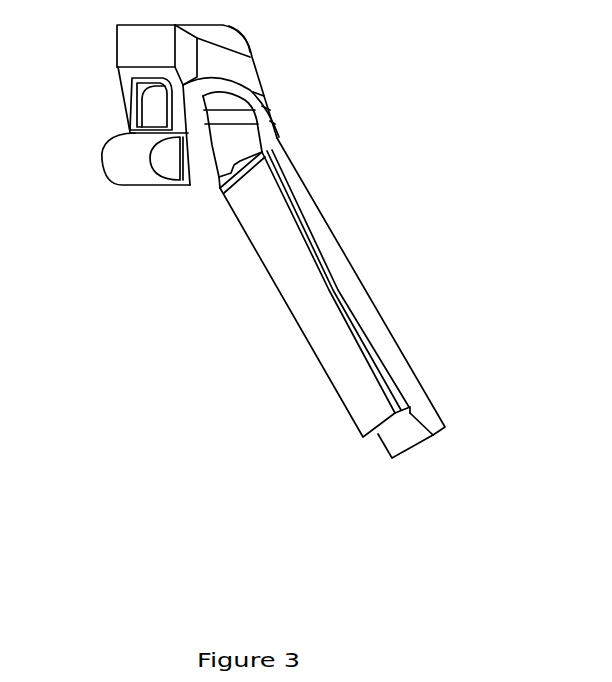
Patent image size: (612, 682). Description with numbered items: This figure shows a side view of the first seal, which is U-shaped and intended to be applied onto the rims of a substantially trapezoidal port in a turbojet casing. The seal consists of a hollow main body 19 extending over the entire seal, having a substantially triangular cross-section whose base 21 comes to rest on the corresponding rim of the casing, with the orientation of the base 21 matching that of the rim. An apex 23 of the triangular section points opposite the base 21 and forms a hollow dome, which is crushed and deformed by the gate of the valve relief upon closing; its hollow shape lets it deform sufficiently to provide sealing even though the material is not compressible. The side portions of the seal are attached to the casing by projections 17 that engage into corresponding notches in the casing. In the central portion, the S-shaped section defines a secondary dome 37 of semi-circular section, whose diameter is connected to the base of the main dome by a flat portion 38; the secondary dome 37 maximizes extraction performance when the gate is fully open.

The projection 17 is at (286, 271).
The hollow main body 19 is at (248, 62).
The base 21 is at (403, 437).
The apex 23 is at (446, 406).
The secondary dome 37 is at (123, 167).
The flat portion 38 is at (128, 101).